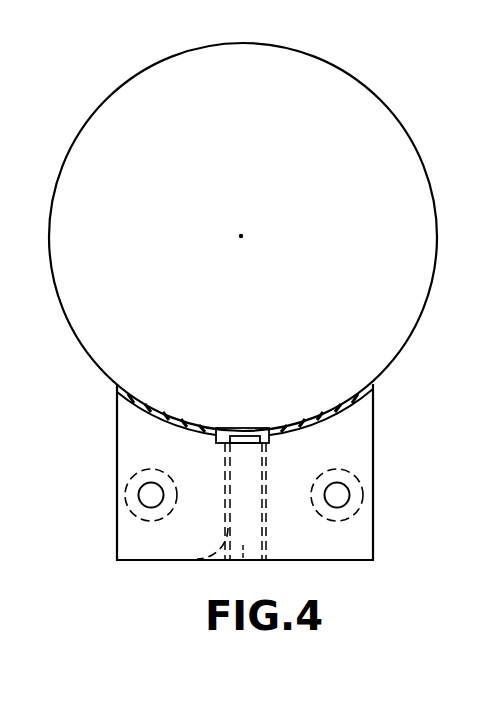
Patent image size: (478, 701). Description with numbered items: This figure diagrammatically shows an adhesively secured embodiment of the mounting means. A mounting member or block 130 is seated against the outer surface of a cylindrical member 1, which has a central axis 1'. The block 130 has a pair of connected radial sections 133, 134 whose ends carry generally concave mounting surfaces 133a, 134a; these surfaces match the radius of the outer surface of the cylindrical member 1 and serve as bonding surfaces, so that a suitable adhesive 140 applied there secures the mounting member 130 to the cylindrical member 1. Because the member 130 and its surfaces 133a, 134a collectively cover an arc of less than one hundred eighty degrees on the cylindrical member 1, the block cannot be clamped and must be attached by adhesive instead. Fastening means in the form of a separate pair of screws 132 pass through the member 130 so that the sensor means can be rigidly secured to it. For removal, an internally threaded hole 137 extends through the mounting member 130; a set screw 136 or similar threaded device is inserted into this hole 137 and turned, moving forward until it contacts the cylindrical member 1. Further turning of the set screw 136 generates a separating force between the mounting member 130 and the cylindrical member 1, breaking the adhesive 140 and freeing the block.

The cylindrical member 1 is at (243, 235).
The central axis 1' is at (258, 207).
The mounting member 130 is at (318, 562).
The screws 132 is at (150, 499).
The radial section 133 is at (197, 461).
The concave mounting surface 133a is at (152, 410).
The radial section 134 is at (331, 461).
The concave mounting surface 134a is at (338, 410).
The set screw 136 is at (246, 567).
The internally threaded hole 137 is at (201, 559).
The adhesive 140 is at (117, 386).